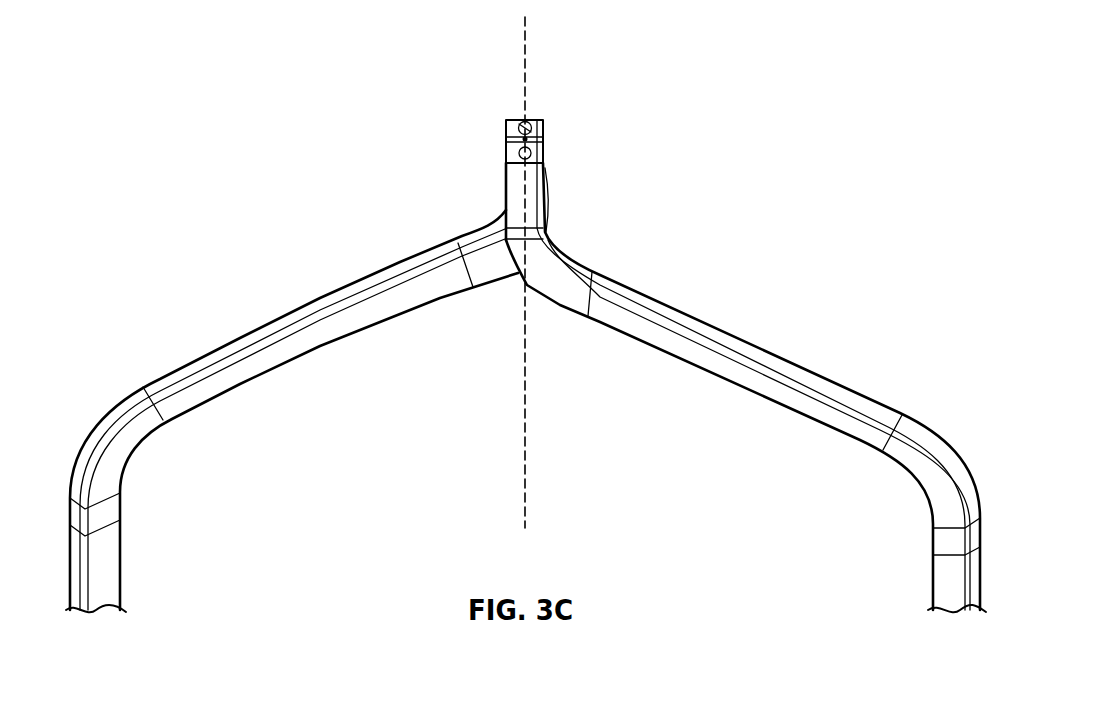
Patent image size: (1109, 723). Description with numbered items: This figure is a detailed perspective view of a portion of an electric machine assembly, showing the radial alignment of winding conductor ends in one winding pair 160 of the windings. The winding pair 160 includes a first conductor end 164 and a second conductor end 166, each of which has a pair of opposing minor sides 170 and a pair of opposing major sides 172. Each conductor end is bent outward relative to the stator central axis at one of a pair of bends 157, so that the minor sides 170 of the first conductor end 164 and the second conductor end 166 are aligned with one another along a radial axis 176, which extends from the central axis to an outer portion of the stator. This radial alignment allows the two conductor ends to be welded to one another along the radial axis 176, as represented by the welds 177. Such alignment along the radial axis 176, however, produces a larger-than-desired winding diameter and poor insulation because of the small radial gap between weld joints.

The winding pair 160 is at (526, 306).
The bend 157 is at (529, 293).
The first conductor end 164 is at (522, 97).
The second conductor end 166 is at (510, 166).
The minor side 170 is at (506, 152).
The major side 172 is at (543, 122).
The weld 177 is at (522, 122).
The radial axis 176 is at (527, 510).